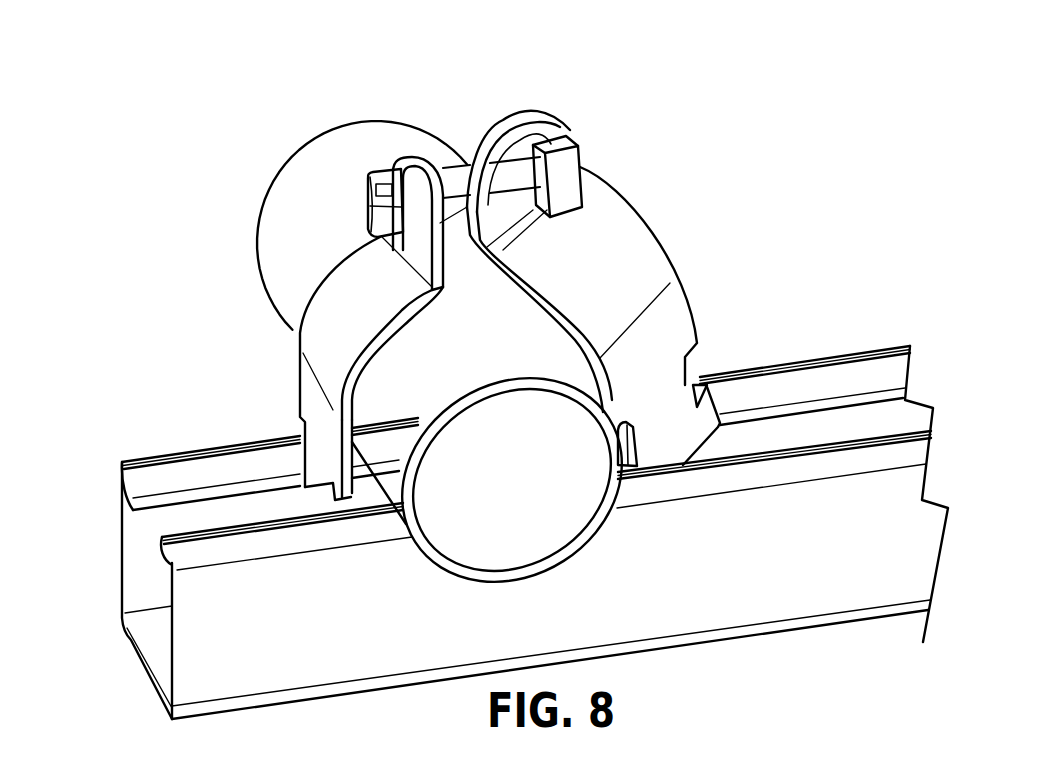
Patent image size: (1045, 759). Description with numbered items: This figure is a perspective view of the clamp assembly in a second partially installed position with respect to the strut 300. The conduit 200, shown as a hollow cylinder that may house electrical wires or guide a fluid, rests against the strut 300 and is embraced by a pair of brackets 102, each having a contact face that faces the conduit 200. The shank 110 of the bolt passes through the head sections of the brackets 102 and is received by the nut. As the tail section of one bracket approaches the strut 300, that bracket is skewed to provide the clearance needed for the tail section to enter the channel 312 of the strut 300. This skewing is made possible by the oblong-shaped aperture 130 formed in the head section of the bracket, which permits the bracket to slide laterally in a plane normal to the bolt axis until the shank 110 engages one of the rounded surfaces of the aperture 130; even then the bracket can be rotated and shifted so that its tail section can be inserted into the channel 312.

The bracket 102 is at (282, 372).
The shank 110 is at (443, 182).
The aperture 130 is at (506, 135).
The conduit 200 is at (287, 144).
The strut 300 is at (100, 544).
The channel 312 is at (765, 426).